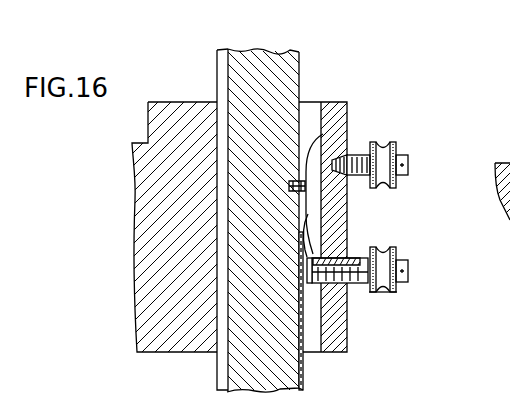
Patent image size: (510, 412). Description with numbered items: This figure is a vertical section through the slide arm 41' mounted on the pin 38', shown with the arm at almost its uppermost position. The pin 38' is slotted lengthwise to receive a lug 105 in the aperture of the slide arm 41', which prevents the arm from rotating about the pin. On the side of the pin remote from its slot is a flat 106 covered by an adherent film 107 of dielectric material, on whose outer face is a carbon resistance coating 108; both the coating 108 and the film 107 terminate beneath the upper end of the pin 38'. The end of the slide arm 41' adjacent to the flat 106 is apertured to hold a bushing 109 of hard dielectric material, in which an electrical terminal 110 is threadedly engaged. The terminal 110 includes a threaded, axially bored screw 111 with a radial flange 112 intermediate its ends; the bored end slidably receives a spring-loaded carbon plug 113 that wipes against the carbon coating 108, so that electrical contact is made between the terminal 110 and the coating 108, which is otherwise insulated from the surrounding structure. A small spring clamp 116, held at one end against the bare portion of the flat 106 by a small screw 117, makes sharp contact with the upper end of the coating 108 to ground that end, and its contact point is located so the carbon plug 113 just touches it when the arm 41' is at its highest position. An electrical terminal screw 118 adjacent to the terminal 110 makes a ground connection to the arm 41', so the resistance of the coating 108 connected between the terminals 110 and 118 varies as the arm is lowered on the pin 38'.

The slide arm 41' is at (180, 214).
The lug 105 is at (220, 73).
The pin 38' is at (277, 220).
The flat 106 is at (300, 77).
The small screw 117 is at (323, 134).
The electrical terminal screw 118 is at (407, 161).
The spring clamp 116 is at (308, 214).
The bushing 109 is at (351, 258).
The screw 111 is at (374, 256).
The electrical terminal 110 is at (405, 285).
The radial flange 112 is at (373, 290).
The carbon plug 113 is at (310, 270).
The carbon resistance coating 108 is at (303, 362).
The adherent film 107 is at (301, 389).